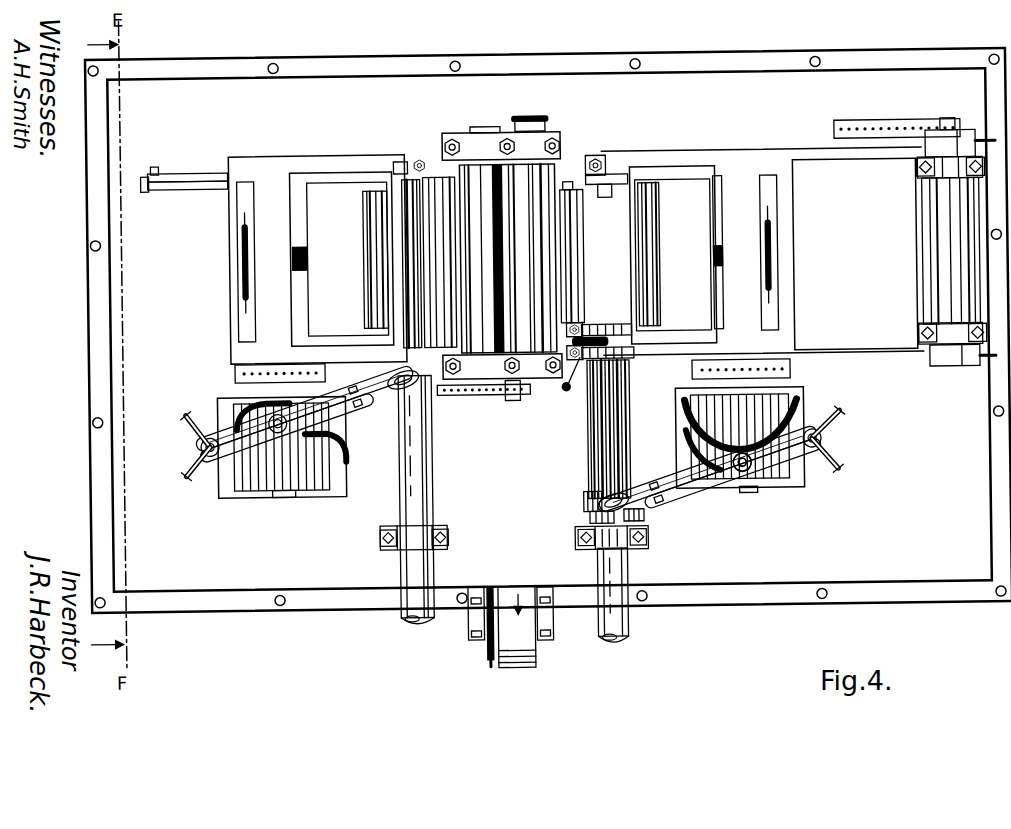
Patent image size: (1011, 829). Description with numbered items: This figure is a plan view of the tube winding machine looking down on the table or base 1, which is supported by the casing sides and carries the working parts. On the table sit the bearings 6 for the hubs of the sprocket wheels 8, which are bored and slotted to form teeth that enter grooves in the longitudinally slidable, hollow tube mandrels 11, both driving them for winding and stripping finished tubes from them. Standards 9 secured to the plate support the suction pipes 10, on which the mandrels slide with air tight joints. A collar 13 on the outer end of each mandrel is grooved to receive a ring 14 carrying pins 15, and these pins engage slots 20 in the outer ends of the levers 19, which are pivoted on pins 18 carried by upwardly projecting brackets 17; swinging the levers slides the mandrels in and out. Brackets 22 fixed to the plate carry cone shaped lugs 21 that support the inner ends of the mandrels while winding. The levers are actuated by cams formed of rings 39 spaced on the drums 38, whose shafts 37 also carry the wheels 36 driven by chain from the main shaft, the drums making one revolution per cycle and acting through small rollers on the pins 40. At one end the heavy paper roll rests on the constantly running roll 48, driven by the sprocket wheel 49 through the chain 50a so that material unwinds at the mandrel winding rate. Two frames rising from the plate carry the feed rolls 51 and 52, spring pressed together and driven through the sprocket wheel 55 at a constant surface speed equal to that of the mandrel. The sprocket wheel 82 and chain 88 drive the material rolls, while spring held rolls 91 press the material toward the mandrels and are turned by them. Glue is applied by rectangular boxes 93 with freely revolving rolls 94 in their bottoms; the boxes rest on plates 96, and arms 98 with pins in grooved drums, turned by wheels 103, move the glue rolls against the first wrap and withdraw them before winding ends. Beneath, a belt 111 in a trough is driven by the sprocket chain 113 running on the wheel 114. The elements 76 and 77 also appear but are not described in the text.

The table or base 1 is at (548, 330).
The bearings 6 is at (569, 374).
The sprocket wheels 8 is at (589, 345).
The standards 9 is at (421, 553).
The suction pipes 10 is at (392, 578).
The tube mandrels 11 is at (583, 470).
The collar 13 is at (584, 523).
The rings 14 is at (578, 507).
The pins 15 is at (638, 522).
The brackets 17 is at (816, 449).
The pins 18 is at (811, 461).
The levers 19 is at (684, 508).
The slots 20 is at (401, 400).
The cone shaped lugs 21 is at (604, 205).
The brackets 22 is at (601, 181).
The wheels 36 is at (232, 377).
The shafts 37 is at (277, 500).
The drums 38 is at (263, 474).
The rings 39 is at (226, 412).
The pins 40 is at (751, 479).
The roll 48 is at (928, 244).
The sprocket wheel 49 is at (952, 130).
The chain 50a is at (884, 132).
The roll 51 is at (476, 195).
The roll 52 is at (507, 258).
The sprocket wheel 55 is at (532, 130).
The guide bar 76 is at (193, 176).
The guide bar lower member 77 is at (186, 192).
The sprocket wheel 82 is at (511, 394).
The chain 88 is at (479, 392).
The spring held rolls 91 is at (576, 270).
The rectangular boxes 93 is at (502, 257).
The rolls 94 is at (363, 301).
The plates 96 is at (503, 257).
The arms 98 is at (300, 258).
The wheels 103 is at (242, 242).
The belt 111 is at (525, 627).
The sprocket chain 113 is at (483, 596).
The wheel 114 is at (481, 662).